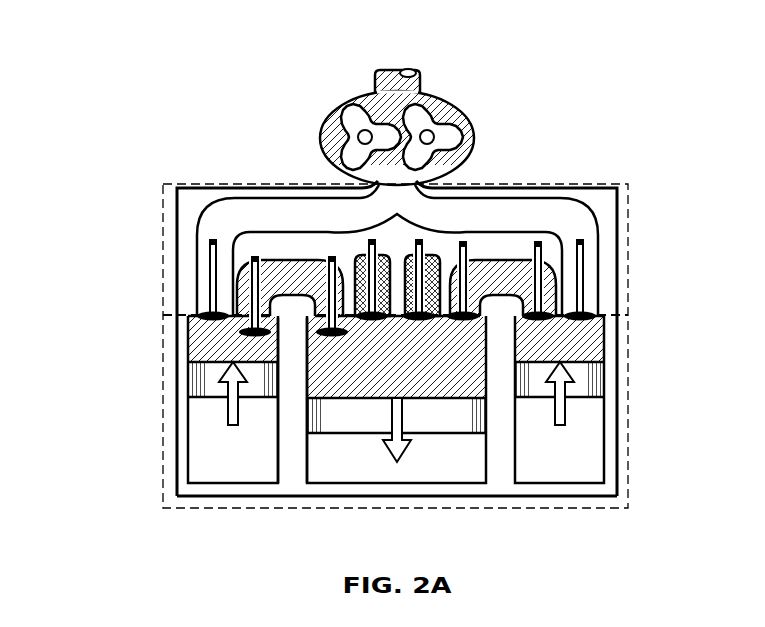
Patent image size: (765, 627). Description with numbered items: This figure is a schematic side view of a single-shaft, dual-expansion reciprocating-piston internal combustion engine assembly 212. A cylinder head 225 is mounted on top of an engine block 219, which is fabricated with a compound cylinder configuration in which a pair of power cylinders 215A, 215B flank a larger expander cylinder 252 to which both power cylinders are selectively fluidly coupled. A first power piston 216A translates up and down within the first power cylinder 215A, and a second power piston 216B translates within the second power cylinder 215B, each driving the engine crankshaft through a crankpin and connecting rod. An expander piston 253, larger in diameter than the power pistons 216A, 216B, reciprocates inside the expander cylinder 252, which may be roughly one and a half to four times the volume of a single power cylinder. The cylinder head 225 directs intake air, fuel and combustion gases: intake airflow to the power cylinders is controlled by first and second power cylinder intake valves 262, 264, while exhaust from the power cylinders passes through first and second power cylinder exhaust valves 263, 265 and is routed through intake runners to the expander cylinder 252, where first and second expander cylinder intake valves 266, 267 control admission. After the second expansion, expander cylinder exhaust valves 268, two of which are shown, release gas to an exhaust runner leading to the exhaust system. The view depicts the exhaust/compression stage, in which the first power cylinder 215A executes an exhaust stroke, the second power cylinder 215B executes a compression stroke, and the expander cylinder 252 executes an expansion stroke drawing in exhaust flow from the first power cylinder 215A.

The internal combustion engine assembly 212 is at (150, 63).
The cylinder head 225 is at (163, 197).
The engine block 219 is at (177, 475).
The first power cylinder 215A is at (188, 436).
The second power cylinder 215B is at (604, 436).
The first power piston 216A is at (188, 374).
The second power piston 216B is at (604, 374).
The expander cylinder 252 is at (307, 462).
The expander piston 253 is at (427, 433).
The first power cylinder intake valve 262 is at (200, 256).
The first power cylinder exhaust valve 263 is at (250, 258).
The second power cylinder intake valve 264 is at (590, 262).
The second power cylinder exhaust valve 265 is at (540, 256).
The first expander cylinder intake valve 266 is at (328, 258).
The second expander cylinder intake valve 267 is at (465, 250).
The expander cylinder exhaust valve 268 is at (362, 250).